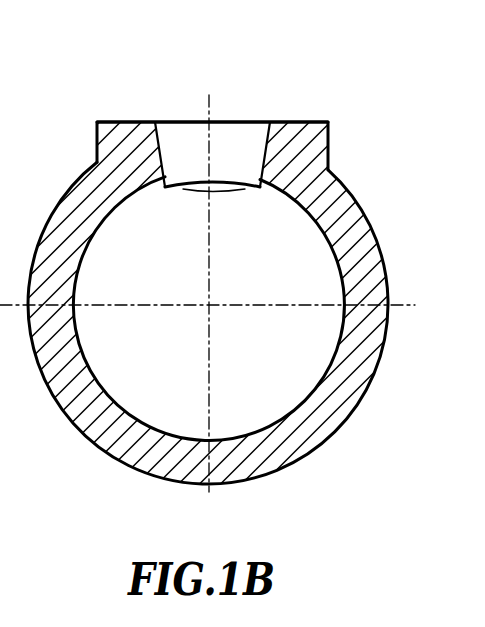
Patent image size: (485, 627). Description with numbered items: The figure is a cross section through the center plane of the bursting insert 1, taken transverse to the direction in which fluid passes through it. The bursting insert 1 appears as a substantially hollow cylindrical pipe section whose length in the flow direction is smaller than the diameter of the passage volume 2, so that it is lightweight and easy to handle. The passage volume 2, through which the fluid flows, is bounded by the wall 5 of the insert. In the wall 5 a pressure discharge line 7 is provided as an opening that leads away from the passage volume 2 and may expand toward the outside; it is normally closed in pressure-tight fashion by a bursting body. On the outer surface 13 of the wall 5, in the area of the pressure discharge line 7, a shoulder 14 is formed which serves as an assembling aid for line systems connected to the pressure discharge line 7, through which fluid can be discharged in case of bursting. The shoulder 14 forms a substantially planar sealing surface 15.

The bursting insert 1 is at (201, 251).
The passage volume 2 is at (257, 268).
The wall 5 is at (201, 278).
The pressure discharge line 7 is at (246, 148).
The outer surface 13 is at (43, 232).
The shoulder 14 is at (96, 140).
The sealing surface 15 is at (133, 121).